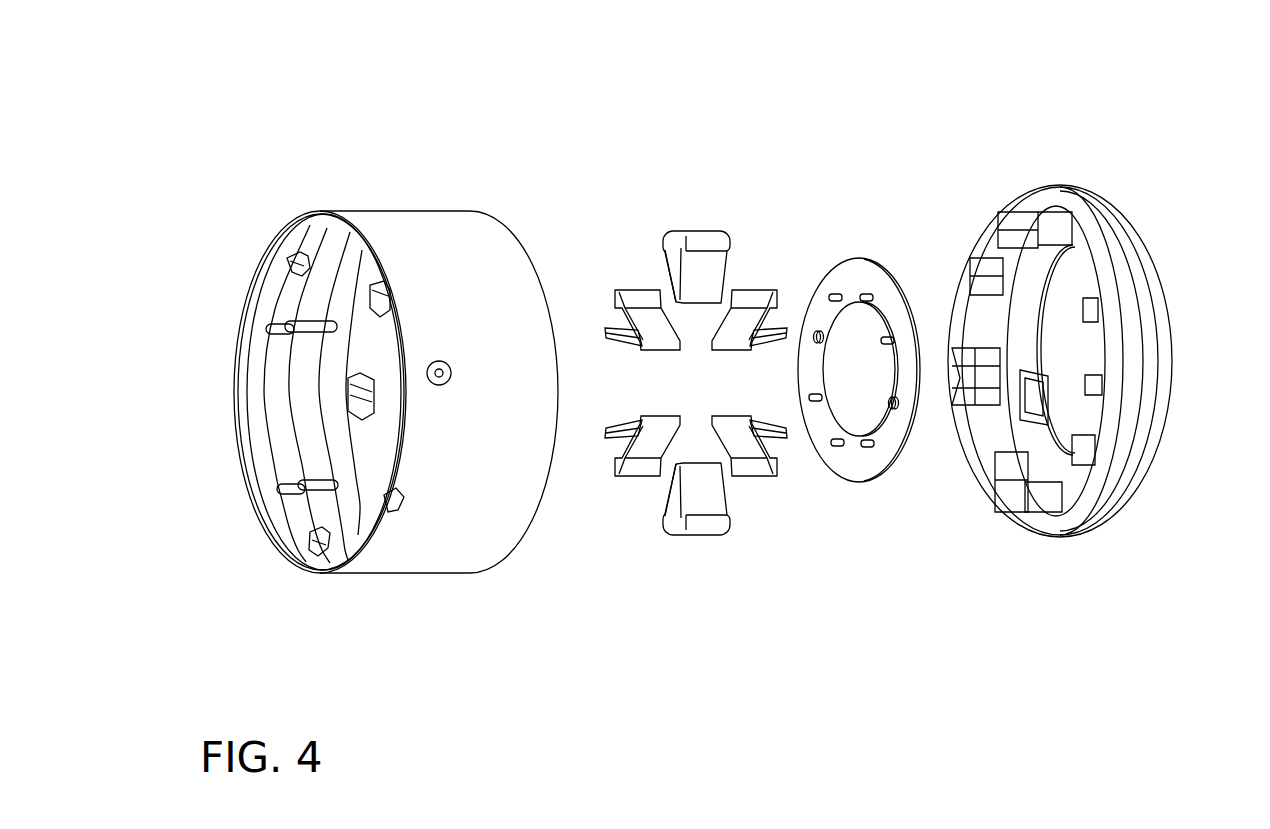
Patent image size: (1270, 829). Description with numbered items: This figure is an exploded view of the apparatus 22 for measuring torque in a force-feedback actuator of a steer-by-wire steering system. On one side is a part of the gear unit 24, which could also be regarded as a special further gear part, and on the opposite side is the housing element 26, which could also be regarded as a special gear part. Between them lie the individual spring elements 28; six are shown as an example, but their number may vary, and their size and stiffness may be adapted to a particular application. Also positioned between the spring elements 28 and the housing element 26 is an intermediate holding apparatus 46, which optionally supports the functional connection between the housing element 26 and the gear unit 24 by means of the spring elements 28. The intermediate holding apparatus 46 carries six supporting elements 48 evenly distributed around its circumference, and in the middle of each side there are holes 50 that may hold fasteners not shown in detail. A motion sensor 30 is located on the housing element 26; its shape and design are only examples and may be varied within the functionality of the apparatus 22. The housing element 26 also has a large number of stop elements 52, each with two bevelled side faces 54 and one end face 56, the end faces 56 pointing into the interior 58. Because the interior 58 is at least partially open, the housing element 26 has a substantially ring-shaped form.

The apparatus 22 is at (348, 132).
The gear unit 24 is at (411, 592).
The housing element 26 is at (1095, 450).
The spring elements 28 is at (702, 538).
The motion sensor 30 is at (1053, 267).
The intermediate holding apparatus 46 is at (859, 410).
The supporting elements 48 is at (887, 333).
The holes 50 is at (817, 318).
The stop elements 52 is at (975, 375).
The bevelled side faces 54 is at (976, 396).
The end face 56 is at (957, 380).
The interior 58 is at (1070, 328).